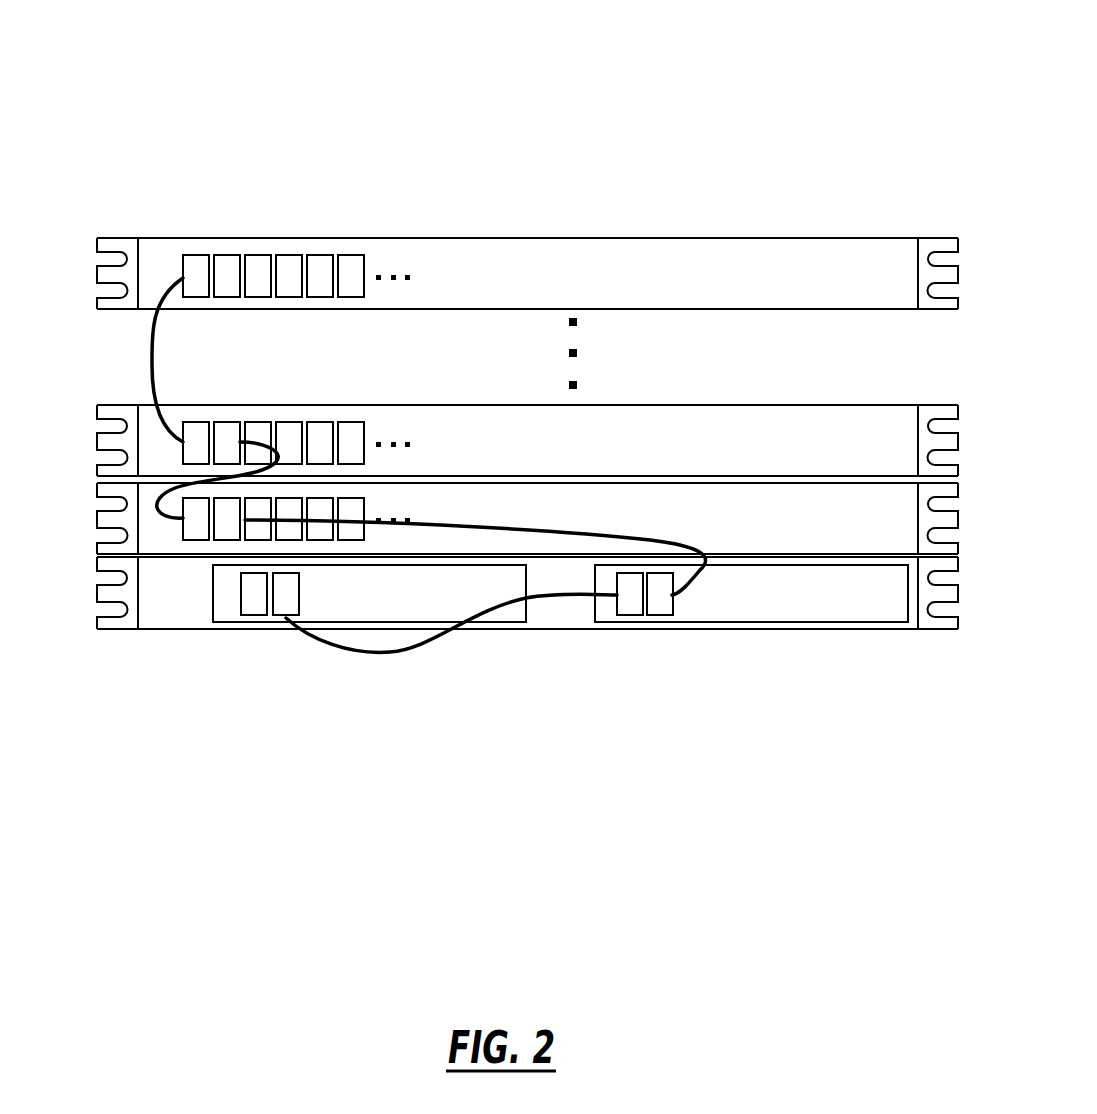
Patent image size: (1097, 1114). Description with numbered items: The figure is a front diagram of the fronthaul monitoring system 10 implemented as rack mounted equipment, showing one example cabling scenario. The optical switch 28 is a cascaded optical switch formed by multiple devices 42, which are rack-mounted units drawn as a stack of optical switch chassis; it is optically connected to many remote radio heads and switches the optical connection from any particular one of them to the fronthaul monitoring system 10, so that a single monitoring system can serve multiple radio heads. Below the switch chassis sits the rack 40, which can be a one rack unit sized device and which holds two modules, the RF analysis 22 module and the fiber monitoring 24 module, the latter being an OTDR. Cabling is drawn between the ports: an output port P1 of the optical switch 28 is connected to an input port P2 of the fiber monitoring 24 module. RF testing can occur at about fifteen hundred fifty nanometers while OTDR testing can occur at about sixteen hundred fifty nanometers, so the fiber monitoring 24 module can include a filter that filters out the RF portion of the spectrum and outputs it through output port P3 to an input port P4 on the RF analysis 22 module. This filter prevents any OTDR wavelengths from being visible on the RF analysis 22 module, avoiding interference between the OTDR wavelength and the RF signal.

The fronthaul monitoring system 10 is at (652, 66).
The optical switch 28 is at (430, 225).
The devices 42 is at (870, 403).
The rack 40 is at (163, 630).
The RF analysis 22 is at (212, 610).
The fiber monitoring 24 is at (590, 610).
The output port P1 is at (228, 515).
The input port P2 is at (662, 617).
The output port P3 is at (632, 617).
The input port P4 is at (272, 617).